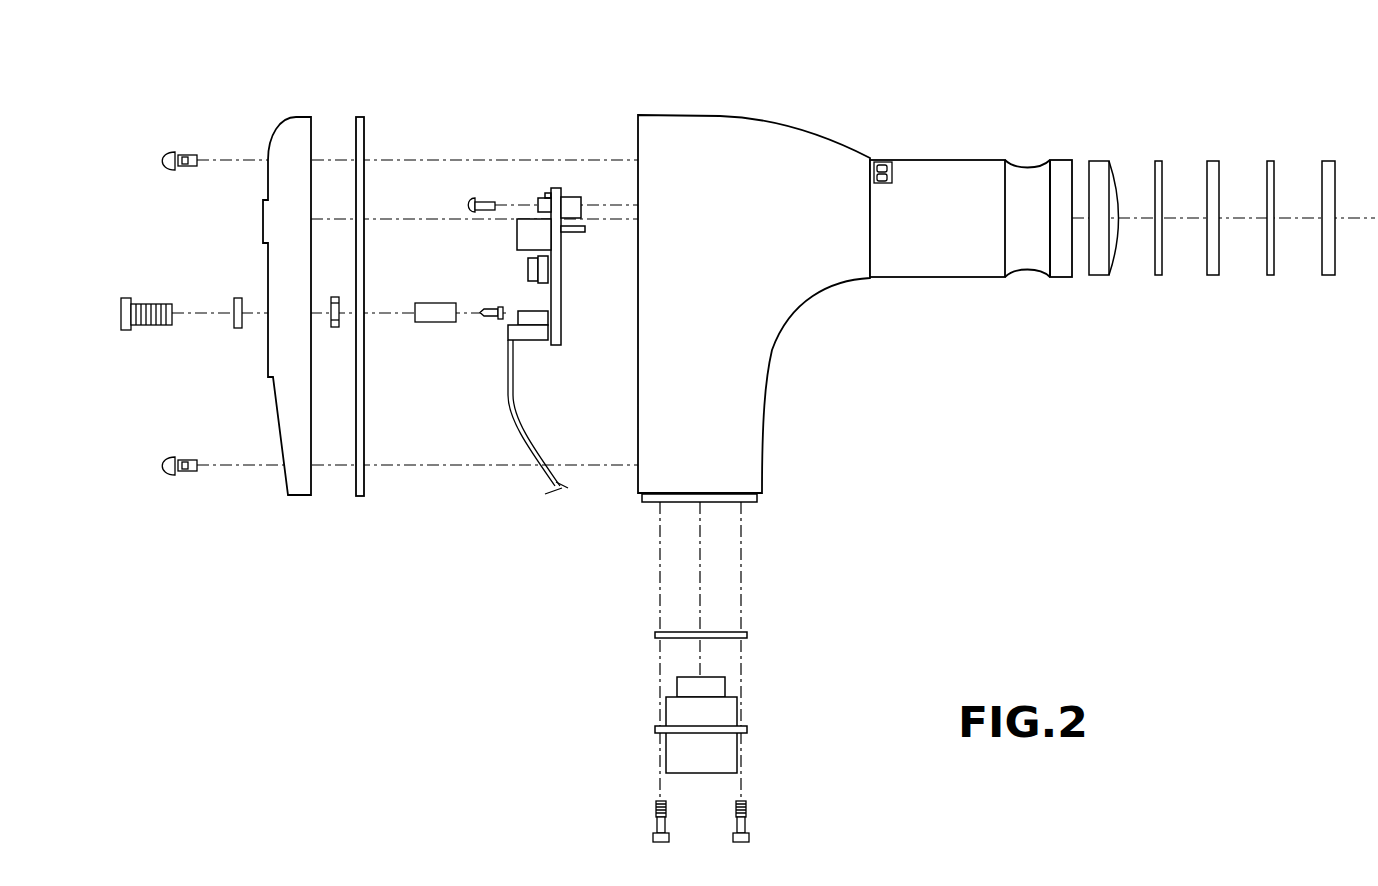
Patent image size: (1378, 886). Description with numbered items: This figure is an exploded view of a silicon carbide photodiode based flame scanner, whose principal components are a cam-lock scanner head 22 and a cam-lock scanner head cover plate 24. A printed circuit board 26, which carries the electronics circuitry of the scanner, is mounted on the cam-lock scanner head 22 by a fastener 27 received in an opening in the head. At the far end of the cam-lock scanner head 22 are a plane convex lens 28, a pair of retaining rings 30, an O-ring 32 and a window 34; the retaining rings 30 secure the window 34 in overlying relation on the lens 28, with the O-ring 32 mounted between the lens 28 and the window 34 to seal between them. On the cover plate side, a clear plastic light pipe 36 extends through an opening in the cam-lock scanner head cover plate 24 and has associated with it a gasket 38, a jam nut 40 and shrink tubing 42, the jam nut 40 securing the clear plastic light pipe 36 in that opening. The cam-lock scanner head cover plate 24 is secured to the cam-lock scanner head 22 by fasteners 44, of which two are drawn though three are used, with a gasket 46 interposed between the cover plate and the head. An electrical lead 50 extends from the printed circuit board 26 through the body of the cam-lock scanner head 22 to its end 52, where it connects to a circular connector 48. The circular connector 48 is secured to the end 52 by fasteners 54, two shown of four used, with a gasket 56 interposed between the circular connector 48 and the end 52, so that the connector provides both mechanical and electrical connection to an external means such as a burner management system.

The cam-lock scanner head 22 is at (808, 140).
The cam-lock scanner head cover plate 24 is at (268, 263).
The printed circuit board 26 is at (563, 312).
The fastener 27 is at (478, 198).
The plane convex lens 28 is at (1100, 160).
The retaining rings 30 is at (1272, 160).
The O-ring 32 is at (1212, 275).
The window 34 is at (1328, 275).
The clear plastic light pipe 36 is at (150, 305).
The gasket 38 is at (233, 329).
The jam nut 40 is at (333, 328).
The shrink tubing 42 is at (430, 323).
The fasteners 44 is at (191, 152).
The gasket 46 is at (365, 264).
The circular connector 48 is at (740, 716).
The electrical lead 50 is at (540, 474).
The end of the cam-lock scanner head 52 is at (749, 504).
The fasteners 54 is at (656, 820).
The gasket 56 is at (748, 634).